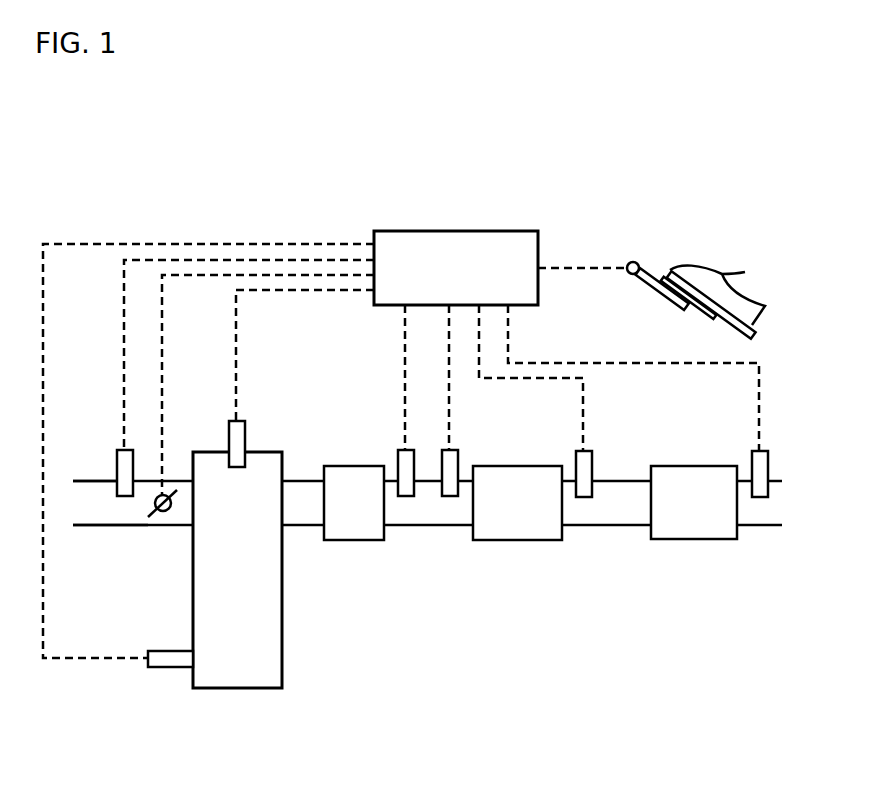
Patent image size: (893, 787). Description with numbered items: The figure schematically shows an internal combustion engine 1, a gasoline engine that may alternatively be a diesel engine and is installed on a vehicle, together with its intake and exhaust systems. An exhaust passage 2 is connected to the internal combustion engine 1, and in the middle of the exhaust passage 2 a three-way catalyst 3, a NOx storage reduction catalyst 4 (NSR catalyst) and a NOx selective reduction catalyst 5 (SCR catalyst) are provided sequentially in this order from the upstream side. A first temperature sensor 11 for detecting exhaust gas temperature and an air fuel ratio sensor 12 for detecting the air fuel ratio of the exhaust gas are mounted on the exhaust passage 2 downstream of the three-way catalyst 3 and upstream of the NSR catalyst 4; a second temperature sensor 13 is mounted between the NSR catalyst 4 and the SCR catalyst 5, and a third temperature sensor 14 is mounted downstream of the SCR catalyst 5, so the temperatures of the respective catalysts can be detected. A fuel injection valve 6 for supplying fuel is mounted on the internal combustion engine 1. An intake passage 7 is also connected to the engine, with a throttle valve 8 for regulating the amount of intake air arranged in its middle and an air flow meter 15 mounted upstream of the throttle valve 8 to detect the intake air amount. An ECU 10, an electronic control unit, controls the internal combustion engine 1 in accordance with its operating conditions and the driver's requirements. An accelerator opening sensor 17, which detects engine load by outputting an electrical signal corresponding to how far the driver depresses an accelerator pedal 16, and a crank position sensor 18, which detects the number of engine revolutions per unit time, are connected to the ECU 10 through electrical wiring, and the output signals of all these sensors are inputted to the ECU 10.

The internal combustion engine 1 is at (282, 658).
The exhaust passage 2 is at (430, 526).
The three-way catalyst 3 is at (352, 541).
The NOx storage reduction catalyst 4 is at (518, 541).
The NOx selective reduction catalyst 5 is at (692, 540).
The fuel injection valve 6 is at (246, 428).
The intake passage 7 is at (127, 527).
The throttle valve 8 is at (163, 511).
The ECU 10 is at (374, 306).
The first temperature sensor 11 is at (396, 458).
The air fuel ratio sensor 12 is at (460, 458).
The second temperature sensor 13 is at (592, 460).
The third temperature sensor 14 is at (752, 460).
The air flow meter 15 is at (117, 455).
The accelerator pedal 16 is at (700, 316).
The accelerator opening sensor 17 is at (629, 274).
The crank position sensor 18 is at (175, 650).